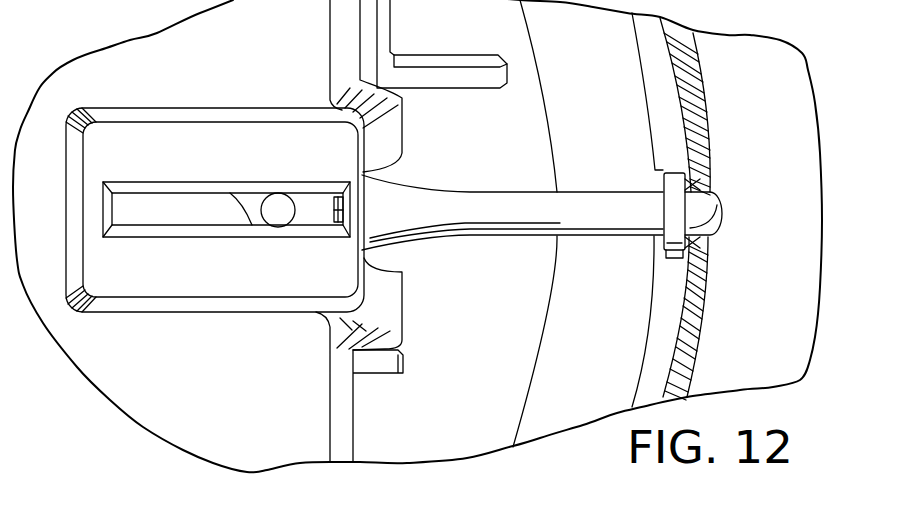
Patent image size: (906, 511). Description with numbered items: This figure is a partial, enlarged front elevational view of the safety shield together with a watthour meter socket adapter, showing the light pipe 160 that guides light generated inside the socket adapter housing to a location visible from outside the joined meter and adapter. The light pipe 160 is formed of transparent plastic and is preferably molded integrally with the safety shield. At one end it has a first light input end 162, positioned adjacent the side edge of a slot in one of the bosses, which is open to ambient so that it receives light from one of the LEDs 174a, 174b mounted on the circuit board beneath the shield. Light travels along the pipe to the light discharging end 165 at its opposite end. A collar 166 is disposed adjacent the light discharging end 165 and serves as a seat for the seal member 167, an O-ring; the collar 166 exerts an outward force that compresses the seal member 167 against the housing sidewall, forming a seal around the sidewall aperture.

The light pipe 160 is at (495, 200).
The first light input end 162 is at (333, 211).
The light discharging end 165 is at (718, 222).
The collar 166 is at (673, 181).
The seal member 167 is at (688, 243).
The LED 174a is at (277, 200).
The LED 174b is at (241, 209).